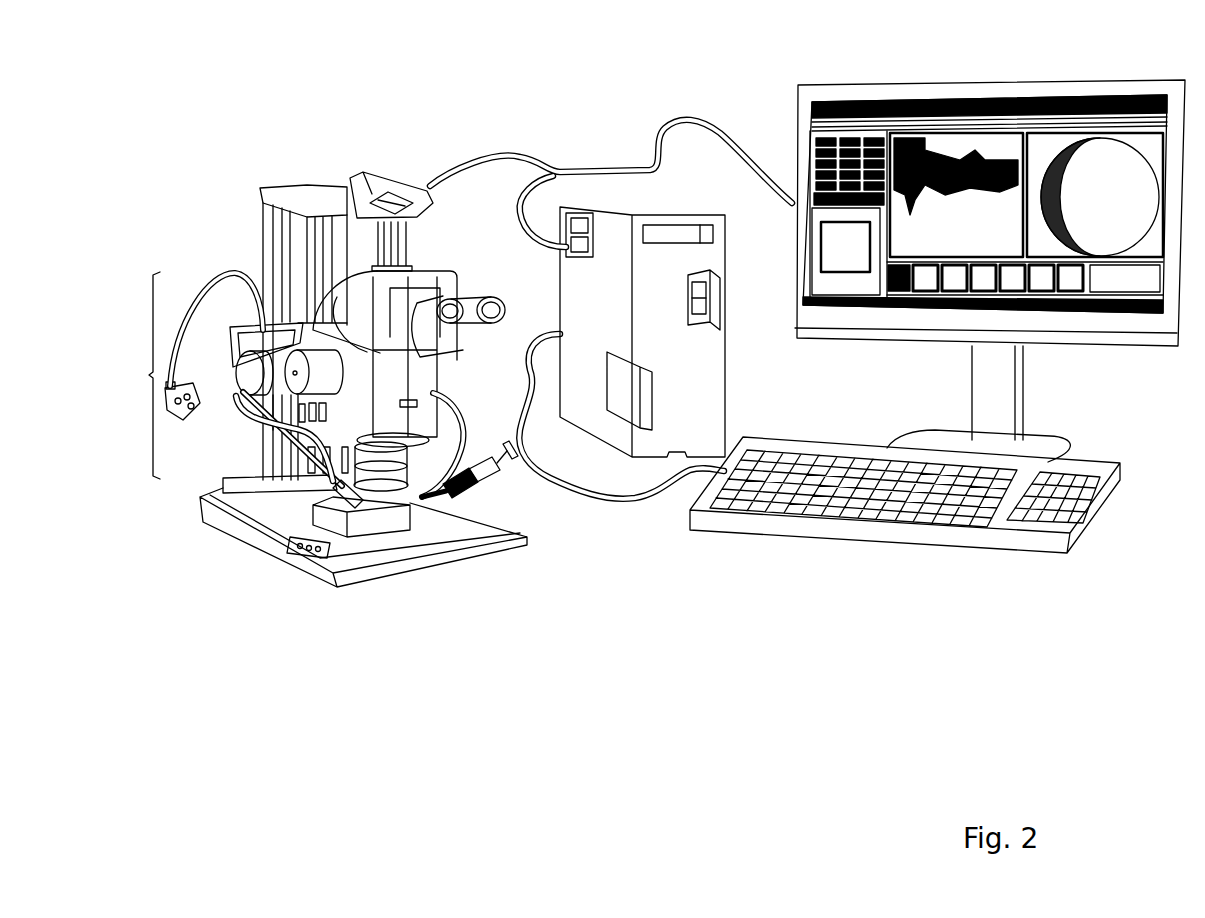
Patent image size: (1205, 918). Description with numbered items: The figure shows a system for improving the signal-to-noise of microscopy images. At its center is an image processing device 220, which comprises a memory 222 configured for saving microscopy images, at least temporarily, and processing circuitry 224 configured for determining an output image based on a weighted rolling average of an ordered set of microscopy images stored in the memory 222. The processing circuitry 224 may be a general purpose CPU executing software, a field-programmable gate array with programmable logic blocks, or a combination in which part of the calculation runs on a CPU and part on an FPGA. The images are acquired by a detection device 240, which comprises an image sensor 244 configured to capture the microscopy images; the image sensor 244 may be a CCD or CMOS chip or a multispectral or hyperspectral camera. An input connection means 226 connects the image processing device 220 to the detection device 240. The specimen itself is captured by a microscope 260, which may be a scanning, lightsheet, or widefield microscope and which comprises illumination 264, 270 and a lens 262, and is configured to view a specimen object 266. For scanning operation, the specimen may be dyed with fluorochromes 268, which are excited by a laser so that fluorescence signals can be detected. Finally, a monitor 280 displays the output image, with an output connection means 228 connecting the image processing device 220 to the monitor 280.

The image processing device 220 is at (697, 212).
The memory 222 is at (637, 366).
The processing circuitry 224 is at (720, 300).
The input connection means 226 is at (579, 213).
The output connection means 228 is at (570, 258).
The detection device 240 is at (370, 177).
The image sensor 244 is at (407, 196).
The microscope 260 is at (137, 375).
The lens 262 is at (258, 458).
The illumination 264 is at (264, 418).
The specimen object 266 is at (317, 516).
The fluorochromes 268 is at (477, 493).
The illumination 270 is at (463, 450).
The monitor 280 is at (882, 68).